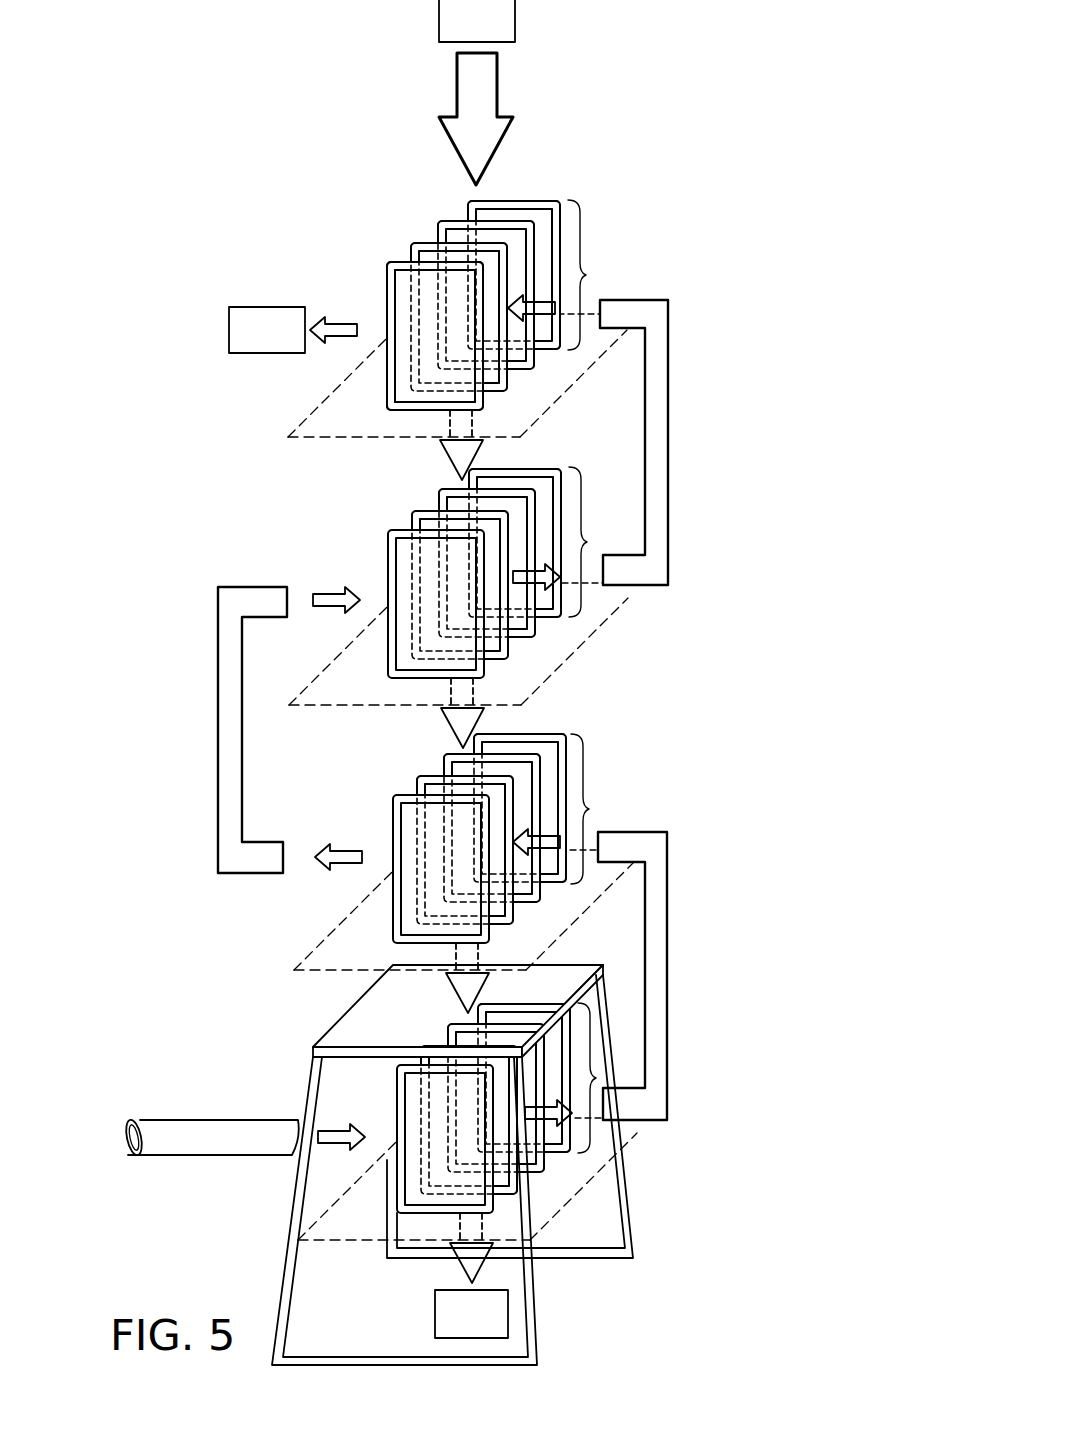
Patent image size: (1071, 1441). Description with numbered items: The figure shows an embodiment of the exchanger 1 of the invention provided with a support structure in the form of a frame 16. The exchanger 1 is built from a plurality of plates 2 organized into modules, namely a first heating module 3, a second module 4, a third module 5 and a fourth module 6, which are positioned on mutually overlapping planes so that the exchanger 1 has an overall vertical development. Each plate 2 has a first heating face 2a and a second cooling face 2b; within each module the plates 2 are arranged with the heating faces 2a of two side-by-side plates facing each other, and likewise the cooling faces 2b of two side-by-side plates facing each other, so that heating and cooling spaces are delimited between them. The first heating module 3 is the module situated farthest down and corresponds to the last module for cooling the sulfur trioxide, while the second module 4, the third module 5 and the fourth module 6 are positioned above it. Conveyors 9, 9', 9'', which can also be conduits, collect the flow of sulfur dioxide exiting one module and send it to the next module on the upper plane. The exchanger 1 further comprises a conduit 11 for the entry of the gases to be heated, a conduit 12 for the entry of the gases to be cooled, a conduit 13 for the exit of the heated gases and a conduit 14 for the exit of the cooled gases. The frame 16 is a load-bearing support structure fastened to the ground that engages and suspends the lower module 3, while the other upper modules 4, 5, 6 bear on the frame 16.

The exchanger 1 is at (232, 424).
The plate 2 is at (391, 234).
The first heating face 2a is at (478, 208).
The second cooling face 2b is at (490, 212).
The first heating module 3 is at (596, 1078).
The second module 4 is at (589, 808).
The third module 5 is at (587, 541).
The fourth module 6 is at (410, 234).
The conveyor 9 is at (676, 976).
The conveyor 9' is at (194, 730).
The conveyor 9'' is at (677, 442).
The conduit for the entry of the gases to be heated 11 is at (232, 1135).
The conduit for the entry of the gases to be cooled 12 is at (515, 22).
The conduit for the exit of the heated gases 13 is at (228, 330).
The conduit for the exit of the cooled gases 14 is at (508, 1316).
The frame 16 is at (498, 1165).